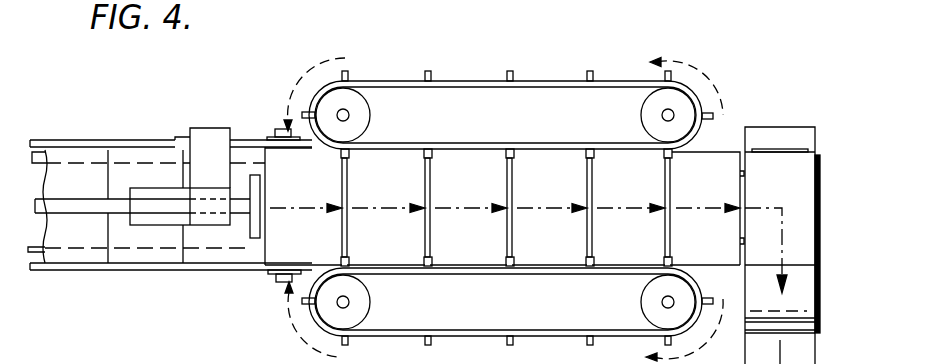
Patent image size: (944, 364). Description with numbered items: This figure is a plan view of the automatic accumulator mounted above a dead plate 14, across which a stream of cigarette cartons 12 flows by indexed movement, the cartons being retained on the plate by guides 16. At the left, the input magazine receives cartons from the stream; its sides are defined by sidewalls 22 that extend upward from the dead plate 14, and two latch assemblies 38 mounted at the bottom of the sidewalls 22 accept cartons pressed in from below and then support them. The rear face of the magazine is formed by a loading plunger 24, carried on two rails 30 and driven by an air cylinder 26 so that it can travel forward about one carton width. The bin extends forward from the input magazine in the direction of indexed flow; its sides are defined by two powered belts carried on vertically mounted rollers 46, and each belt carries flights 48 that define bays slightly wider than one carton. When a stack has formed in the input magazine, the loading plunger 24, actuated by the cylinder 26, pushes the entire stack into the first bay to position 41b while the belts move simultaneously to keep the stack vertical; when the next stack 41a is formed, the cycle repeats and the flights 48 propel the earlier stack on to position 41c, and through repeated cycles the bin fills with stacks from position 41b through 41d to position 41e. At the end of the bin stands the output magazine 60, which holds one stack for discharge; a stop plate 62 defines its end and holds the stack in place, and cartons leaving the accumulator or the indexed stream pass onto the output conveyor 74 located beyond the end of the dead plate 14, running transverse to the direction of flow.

The cigarette cartons 12 is at (83, 240).
The dead plate 14 is at (38, 272).
The guides 16 is at (40, 140).
The sidewalls 22 is at (265, 140).
The loading plunger 24 is at (252, 228).
The air cylinder 26 is at (145, 188).
The rails 30 is at (80, 200).
The latch assemblies 38 is at (280, 123).
The stack 41a is at (315, 188).
The position 41b is at (393, 188).
The position 41c is at (478, 246).
The position 41d is at (558, 188).
The position 41e is at (639, 188).
The rollers 46 is at (366, 122).
The flights 48 is at (590, 70).
The output magazine 60 is at (722, 190).
The stop plate 62 is at (748, 190).
The output conveyor 74 is at (757, 302).